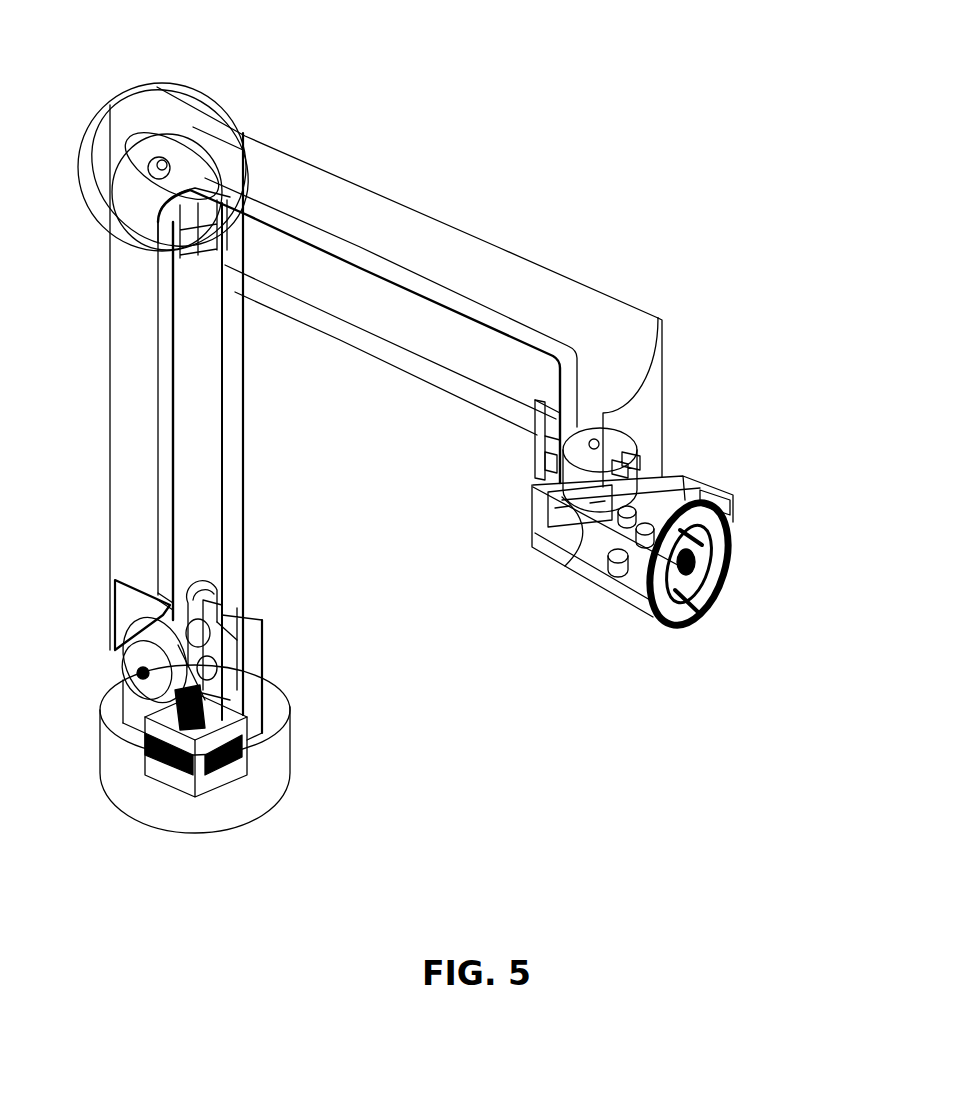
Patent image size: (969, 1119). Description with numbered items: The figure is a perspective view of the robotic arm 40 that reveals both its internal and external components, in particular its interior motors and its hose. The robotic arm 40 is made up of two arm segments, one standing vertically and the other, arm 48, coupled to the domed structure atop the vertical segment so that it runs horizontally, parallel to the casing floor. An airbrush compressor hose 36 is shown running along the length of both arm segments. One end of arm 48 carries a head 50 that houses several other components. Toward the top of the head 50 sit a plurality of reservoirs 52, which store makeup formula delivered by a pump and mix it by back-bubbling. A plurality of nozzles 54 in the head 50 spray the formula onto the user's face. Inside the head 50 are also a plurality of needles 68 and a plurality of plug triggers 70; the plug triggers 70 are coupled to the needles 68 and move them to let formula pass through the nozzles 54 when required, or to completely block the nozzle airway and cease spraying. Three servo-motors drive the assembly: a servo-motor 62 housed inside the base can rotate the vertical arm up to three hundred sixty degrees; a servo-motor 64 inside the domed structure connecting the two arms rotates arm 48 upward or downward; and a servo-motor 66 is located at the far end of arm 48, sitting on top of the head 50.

The airbrush compressor hose 36 is at (185, 485).
The robotic arm 40 is at (153, 144).
The arm 48 is at (472, 340).
The head 50 is at (657, 446).
The reservoirs 52 is at (723, 497).
The nozzles 54 is at (723, 557).
The servo-motor 62 is at (198, 583).
The servo-motor 64 is at (232, 292).
The servo-motor 66 is at (540, 455).
The needles 68 is at (627, 510).
The plug triggers 70 is at (567, 518).